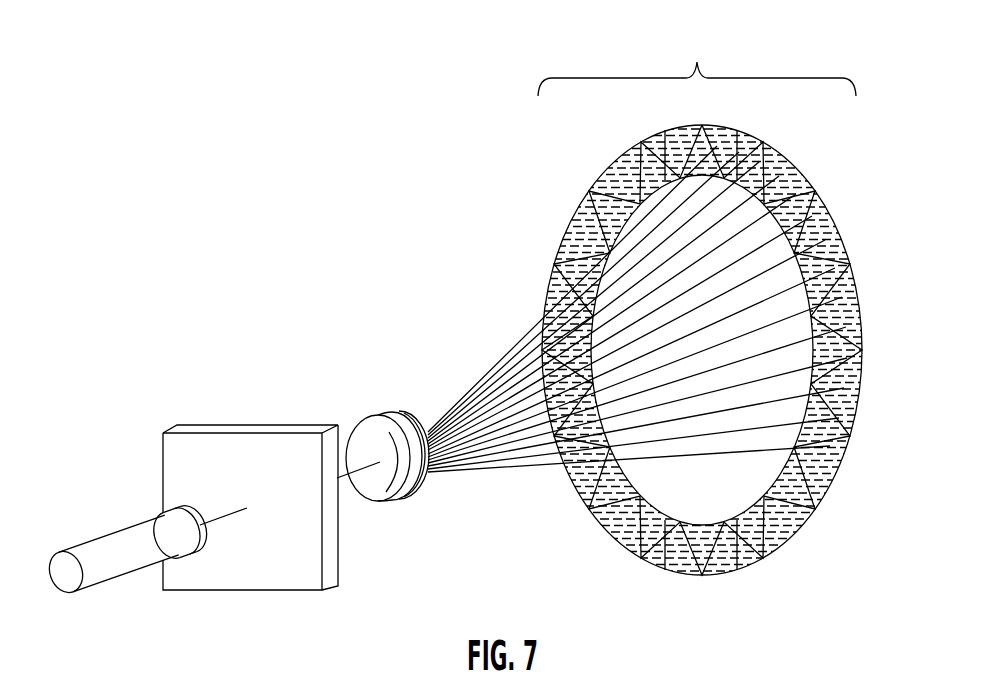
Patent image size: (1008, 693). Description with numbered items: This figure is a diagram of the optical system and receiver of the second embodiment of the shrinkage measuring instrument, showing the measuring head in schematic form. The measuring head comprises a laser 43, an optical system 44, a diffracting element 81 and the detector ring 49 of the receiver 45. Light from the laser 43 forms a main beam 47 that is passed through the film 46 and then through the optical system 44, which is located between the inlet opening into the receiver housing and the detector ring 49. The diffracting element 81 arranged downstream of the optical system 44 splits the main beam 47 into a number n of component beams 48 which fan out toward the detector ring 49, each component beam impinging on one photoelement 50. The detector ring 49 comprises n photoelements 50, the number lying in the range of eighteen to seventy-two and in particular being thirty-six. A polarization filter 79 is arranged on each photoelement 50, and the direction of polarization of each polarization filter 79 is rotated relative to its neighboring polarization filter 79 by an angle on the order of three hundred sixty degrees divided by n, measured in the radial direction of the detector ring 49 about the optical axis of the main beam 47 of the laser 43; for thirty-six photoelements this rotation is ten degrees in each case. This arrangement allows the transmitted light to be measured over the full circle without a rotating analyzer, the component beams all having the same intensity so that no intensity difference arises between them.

The laser 43 is at (122, 574).
The optical system 44 is at (386, 497).
The receiver 45 is at (707, 311).
The film 46 is at (242, 430).
The main beam 47 is at (403, 461).
The light beam bundle 48 is at (511, 440).
The detector ring 49 is at (595, 190).
The photoelement 50 is at (838, 228).
The polarization filter 79 is at (752, 548).
The diffracting element 81 is at (427, 478).